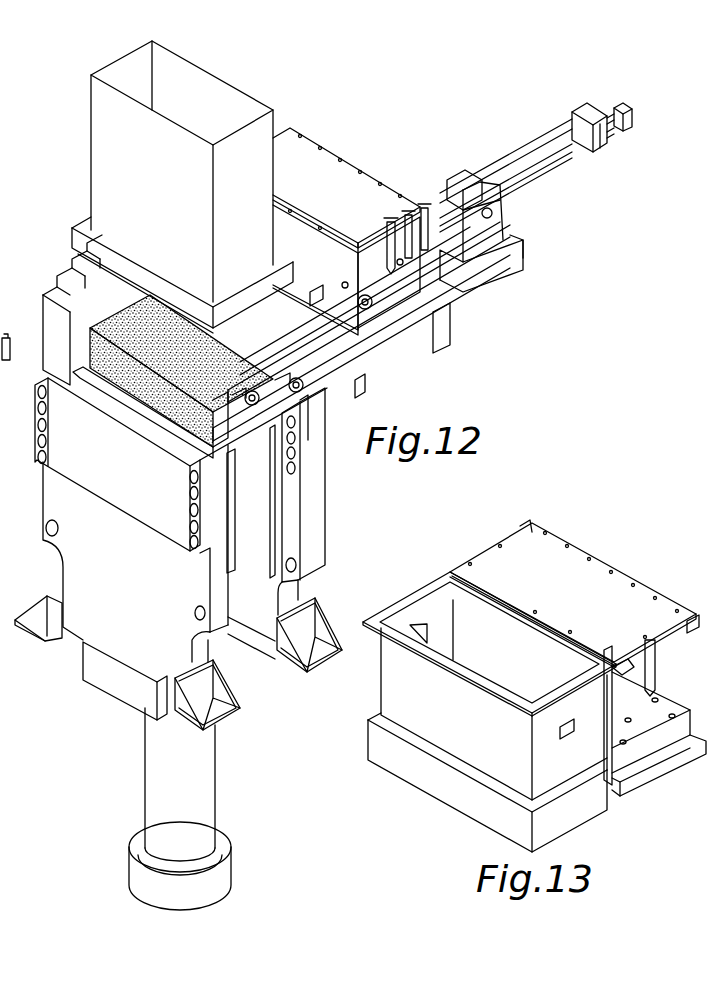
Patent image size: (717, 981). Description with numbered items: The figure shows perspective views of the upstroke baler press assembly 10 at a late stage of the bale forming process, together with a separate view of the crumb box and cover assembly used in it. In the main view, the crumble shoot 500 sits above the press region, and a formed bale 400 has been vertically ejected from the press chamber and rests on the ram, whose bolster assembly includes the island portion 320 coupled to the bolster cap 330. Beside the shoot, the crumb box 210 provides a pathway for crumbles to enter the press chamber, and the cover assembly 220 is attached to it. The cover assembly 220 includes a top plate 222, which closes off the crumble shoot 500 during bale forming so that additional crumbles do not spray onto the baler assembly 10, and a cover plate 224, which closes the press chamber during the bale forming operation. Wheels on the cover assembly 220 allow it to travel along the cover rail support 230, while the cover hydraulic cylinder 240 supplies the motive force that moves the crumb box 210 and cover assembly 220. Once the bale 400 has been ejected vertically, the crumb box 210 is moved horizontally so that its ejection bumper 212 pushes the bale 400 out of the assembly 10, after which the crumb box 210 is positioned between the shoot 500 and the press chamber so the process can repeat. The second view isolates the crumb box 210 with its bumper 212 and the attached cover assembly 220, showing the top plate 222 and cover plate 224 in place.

In FIG. 12, the baler press assembly 10 is at (364, 98).
In FIG. 12, the crumble shoot 500 is at (94, 141).
In FIG. 12, the top plate 222 is at (308, 200).
In FIG. 13, the top plate 222 is at (554, 602).
In FIG. 12, the crumb box 210 is at (286, 252).
In FIG. 13, the crumb box 210 is at (412, 593).
In FIG. 12, the cover hydraulic cylinder 240 is at (538, 150).
In FIG. 12, the cover rail support 230 is at (400, 303).
In FIG. 12, the formed bale 400 is at (166, 360).
In FIG. 12, the bolster cap 330 is at (244, 450).
In FIG. 12, the island portion 320 is at (238, 465).
In FIG. 13, the ejection bumper 212 is at (430, 785).
In FIG. 13, the cover assembly 220 is at (658, 742).
In FIG. 13, the cover plate 224 is at (636, 787).